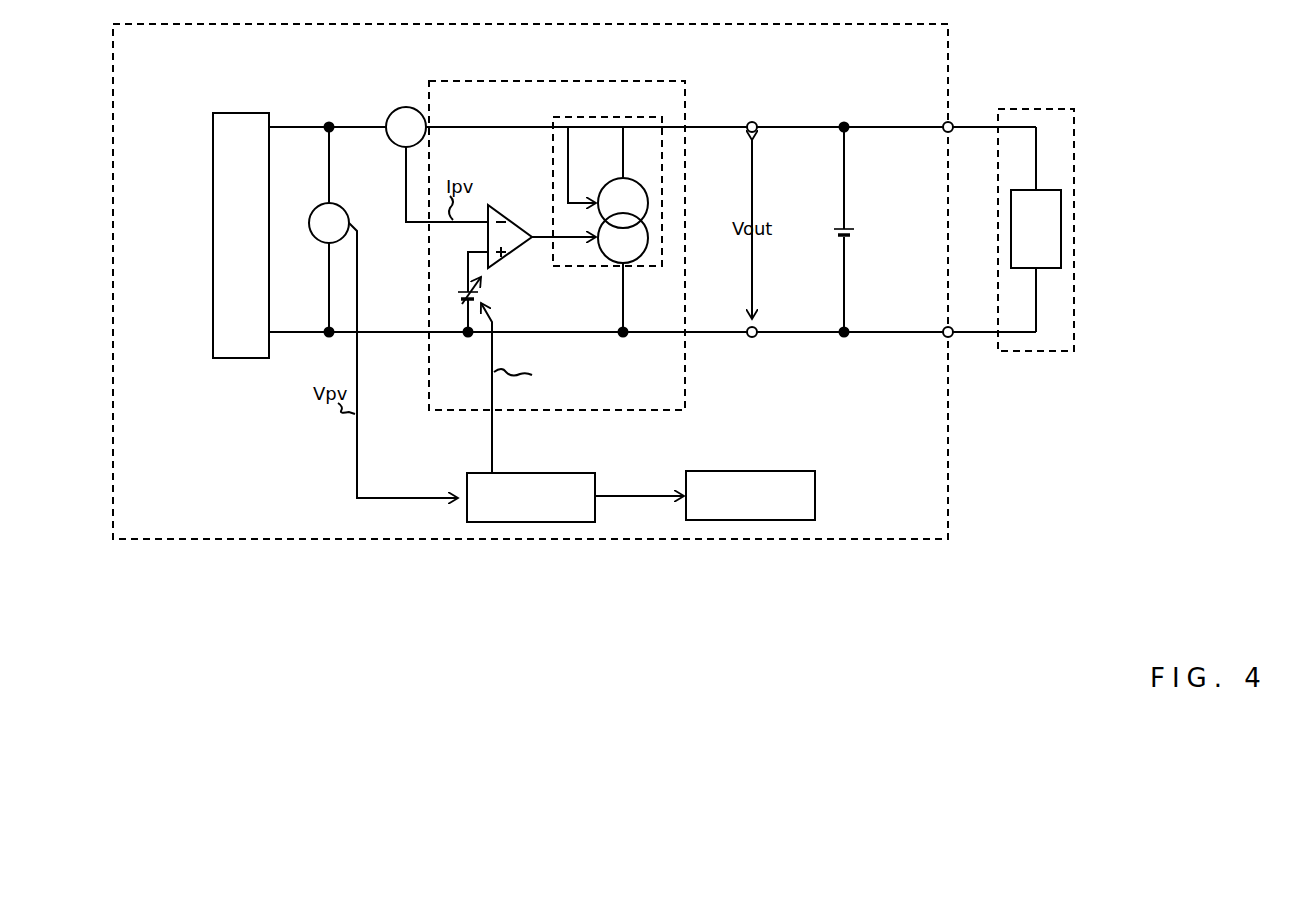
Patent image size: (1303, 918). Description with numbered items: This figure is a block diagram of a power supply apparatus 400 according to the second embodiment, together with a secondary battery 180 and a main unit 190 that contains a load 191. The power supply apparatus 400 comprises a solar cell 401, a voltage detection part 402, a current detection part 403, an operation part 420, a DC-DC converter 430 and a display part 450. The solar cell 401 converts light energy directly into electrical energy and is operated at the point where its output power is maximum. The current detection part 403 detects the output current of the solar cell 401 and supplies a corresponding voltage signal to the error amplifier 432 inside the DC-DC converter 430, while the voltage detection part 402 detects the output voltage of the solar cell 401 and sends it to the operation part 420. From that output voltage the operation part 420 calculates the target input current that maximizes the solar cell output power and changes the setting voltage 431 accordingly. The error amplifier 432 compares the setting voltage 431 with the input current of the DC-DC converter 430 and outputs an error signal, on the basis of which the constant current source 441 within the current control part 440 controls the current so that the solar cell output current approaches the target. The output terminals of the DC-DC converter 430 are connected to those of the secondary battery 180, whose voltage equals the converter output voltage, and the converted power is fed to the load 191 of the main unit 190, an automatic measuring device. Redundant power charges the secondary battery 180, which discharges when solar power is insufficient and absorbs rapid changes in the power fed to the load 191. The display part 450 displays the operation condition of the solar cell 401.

The power supply apparatus 400 is at (467, 539).
The solar cell 401 is at (222, 113).
The voltage detection part 402 is at (312, 207).
The current detection part 403 is at (395, 110).
The operation part 420 is at (548, 473).
The DC-DC converter 430 is at (448, 81).
The setting voltage 431 is at (476, 297).
The error amplifier 432 is at (492, 208).
The current control part 440 is at (580, 117).
The constant current source 441 is at (608, 181).
The display part 450 is at (775, 471).
The secondary battery 180 is at (849, 237).
The main unit 190 is at (1007, 109).
The load 191 is at (1040, 190).